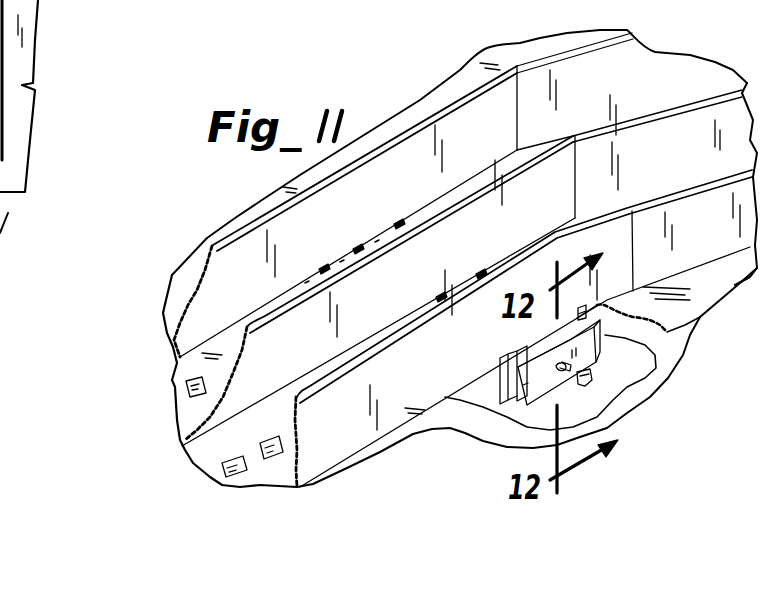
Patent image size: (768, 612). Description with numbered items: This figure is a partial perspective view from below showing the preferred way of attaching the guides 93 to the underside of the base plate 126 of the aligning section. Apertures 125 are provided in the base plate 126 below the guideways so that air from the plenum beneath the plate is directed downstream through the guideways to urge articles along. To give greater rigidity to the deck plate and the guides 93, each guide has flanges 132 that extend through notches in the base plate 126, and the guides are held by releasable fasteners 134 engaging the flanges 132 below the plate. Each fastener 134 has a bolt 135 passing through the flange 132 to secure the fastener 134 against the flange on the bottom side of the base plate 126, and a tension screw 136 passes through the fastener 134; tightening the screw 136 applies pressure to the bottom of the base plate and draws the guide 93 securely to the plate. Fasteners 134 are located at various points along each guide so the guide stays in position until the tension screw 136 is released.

The guides 93 is at (232, 272).
The apertures 125 is at (187, 382).
The base plate 126 is at (212, 452).
The flanges 132 is at (513, 347).
The releasable fasteners 134 is at (605, 347).
The bolt 135 is at (557, 380).
The tension screw 136 is at (598, 378).